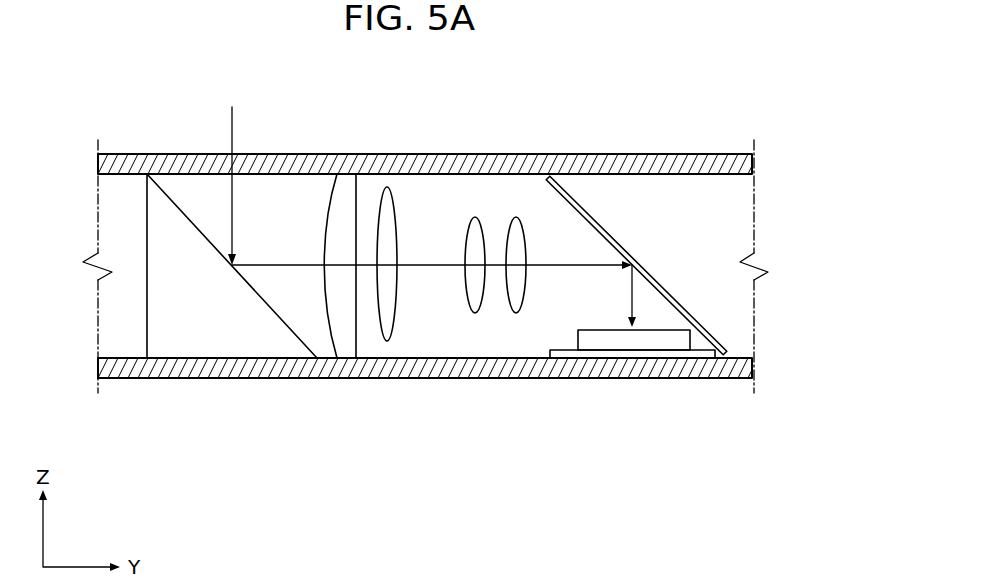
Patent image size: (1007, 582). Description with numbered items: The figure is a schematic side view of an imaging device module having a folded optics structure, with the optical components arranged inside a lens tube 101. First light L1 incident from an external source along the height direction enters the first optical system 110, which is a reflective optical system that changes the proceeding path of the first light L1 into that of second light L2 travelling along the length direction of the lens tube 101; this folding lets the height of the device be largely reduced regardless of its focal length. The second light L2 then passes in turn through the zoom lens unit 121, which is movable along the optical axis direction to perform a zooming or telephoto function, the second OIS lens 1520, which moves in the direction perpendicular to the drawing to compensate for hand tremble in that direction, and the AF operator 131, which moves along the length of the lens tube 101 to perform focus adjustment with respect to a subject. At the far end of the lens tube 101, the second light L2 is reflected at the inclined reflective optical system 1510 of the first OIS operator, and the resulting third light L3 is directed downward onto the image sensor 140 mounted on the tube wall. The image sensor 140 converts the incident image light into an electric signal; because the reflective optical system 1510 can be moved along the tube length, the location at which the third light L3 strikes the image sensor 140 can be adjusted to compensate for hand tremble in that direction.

The lens tube 101 is at (717, 373).
The first optical system 110 is at (213, 347).
The zoom lens unit 121 is at (345, 347).
The second OIS lens 1520 is at (387, 342).
The AF operator 131 is at (475, 313).
The reflective optical system 1510 is at (613, 238).
The image sensor 140 is at (633, 340).
The first light L1 is at (232, 122).
The second light L2 is at (290, 262).
The third light L3 is at (632, 299).